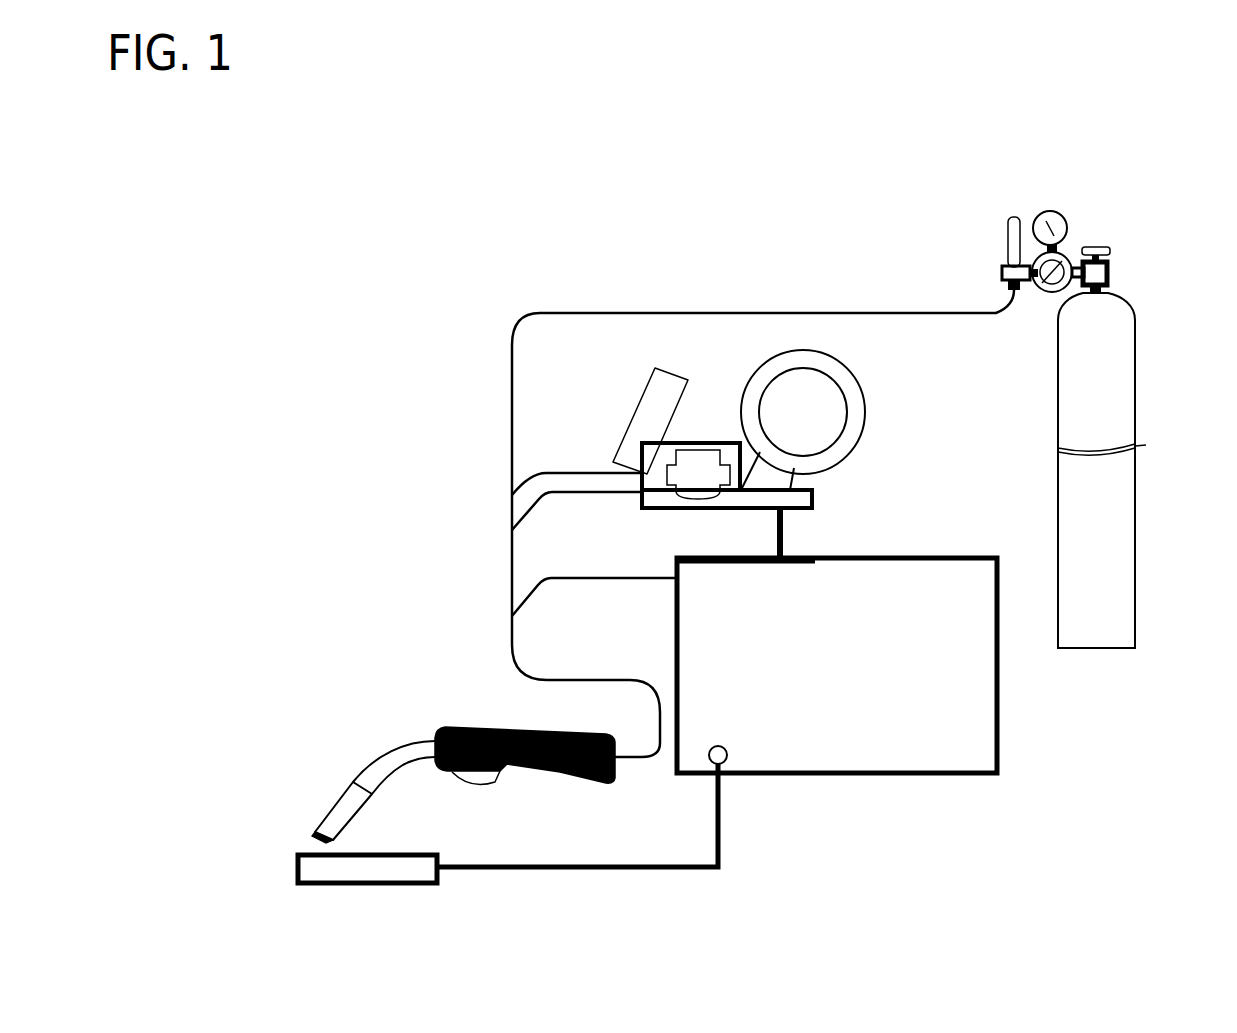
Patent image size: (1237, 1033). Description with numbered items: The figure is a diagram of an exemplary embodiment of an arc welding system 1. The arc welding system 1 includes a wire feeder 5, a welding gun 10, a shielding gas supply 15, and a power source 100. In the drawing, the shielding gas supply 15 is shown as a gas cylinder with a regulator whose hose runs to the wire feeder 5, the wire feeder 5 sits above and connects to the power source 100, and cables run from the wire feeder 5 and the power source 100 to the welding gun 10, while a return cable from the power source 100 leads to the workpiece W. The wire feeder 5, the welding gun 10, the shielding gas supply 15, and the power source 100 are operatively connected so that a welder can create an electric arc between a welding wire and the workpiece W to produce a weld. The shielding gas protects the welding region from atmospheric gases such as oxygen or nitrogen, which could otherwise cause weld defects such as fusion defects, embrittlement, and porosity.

The arc welding system 1 is at (473, 165).
The wire feeder 5 is at (707, 443).
The welding gun 10 is at (402, 747).
The shielding gas supply 15 is at (1127, 307).
The power source 100 is at (833, 773).
The workpiece W is at (353, 883).